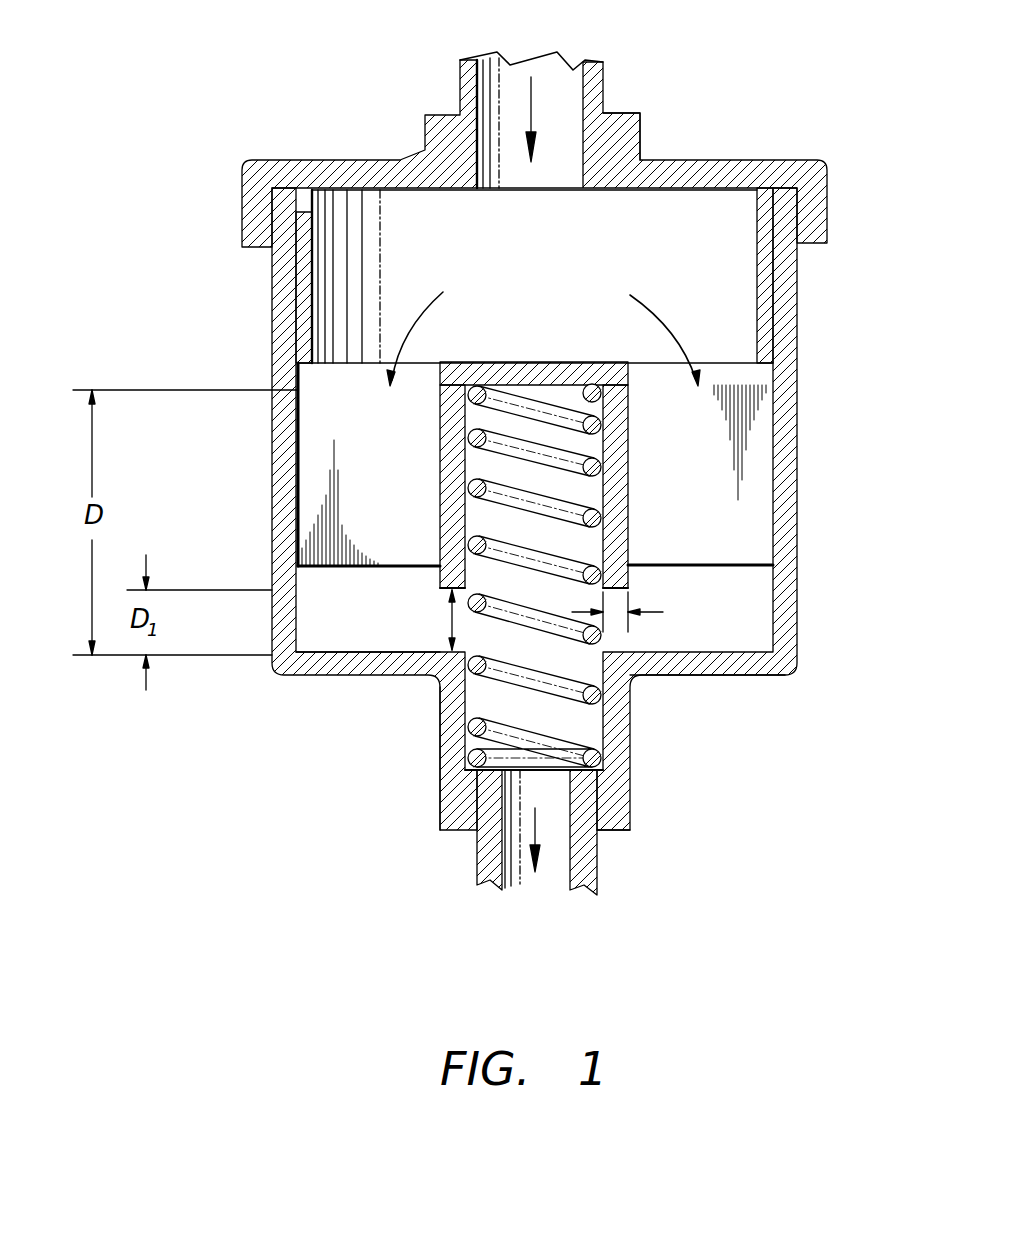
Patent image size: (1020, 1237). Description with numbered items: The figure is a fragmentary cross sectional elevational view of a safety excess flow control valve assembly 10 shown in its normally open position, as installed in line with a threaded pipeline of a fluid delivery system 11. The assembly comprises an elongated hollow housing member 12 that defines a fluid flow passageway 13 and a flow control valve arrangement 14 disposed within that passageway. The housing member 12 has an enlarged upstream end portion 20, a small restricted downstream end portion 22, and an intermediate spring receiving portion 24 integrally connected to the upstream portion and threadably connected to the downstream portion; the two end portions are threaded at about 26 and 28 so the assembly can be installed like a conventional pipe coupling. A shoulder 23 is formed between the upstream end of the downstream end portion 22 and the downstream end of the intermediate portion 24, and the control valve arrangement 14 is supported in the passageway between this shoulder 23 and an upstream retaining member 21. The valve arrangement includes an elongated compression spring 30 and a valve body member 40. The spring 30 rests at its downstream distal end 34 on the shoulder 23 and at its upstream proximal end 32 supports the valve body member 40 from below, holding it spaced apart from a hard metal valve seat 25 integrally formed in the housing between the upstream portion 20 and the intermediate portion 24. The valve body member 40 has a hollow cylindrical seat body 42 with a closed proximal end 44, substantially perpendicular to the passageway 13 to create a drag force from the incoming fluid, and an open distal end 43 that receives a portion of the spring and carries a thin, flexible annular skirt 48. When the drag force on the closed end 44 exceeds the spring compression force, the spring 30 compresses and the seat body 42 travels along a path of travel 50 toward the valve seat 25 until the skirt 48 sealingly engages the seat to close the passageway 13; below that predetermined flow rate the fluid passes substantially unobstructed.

The excess flow control valve assembly 10 is at (233, 148).
The fluid delivery system 11 is at (605, 80).
The housing member 12 is at (800, 598).
The fluid flow passageway 13 is at (532, 78).
The flow control valve arrangement 14 is at (413, 700).
The enlarged upstream end portion 20 is at (785, 258).
The upstream retaining member 21 is at (297, 256).
The downstream end portion 22 is at (610, 890).
The shoulder 23 is at (470, 770).
The intermediate spring receiving portion 24 is at (612, 703).
The valve seat 25 is at (347, 652).
The threads 26 is at (640, 130).
The threads 28 is at (635, 830).
The compression spring 30 is at (703, 670).
The proximal end of spring 32 is at (450, 490).
The distal end of spring 34 is at (490, 805).
The valve body member 40 is at (640, 525).
The seat body 42 is at (640, 588).
The open distal end 43 is at (613, 600).
The closed proximal end 44 is at (547, 363).
The annular skirt 48 is at (447, 597).
The path of travel 50 is at (447, 615).